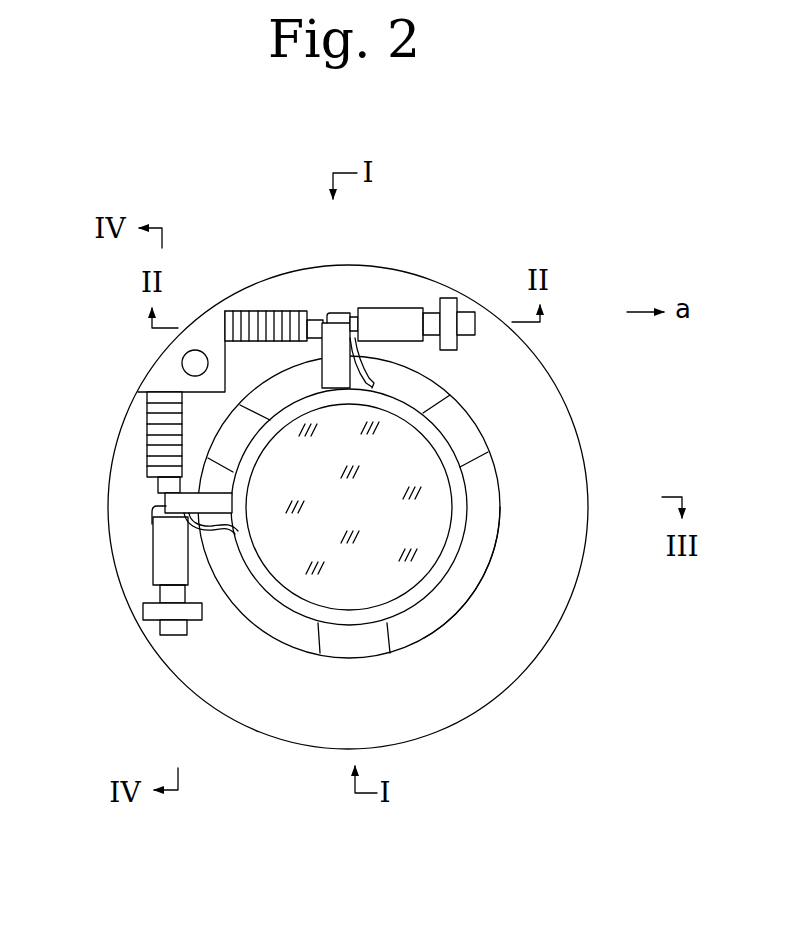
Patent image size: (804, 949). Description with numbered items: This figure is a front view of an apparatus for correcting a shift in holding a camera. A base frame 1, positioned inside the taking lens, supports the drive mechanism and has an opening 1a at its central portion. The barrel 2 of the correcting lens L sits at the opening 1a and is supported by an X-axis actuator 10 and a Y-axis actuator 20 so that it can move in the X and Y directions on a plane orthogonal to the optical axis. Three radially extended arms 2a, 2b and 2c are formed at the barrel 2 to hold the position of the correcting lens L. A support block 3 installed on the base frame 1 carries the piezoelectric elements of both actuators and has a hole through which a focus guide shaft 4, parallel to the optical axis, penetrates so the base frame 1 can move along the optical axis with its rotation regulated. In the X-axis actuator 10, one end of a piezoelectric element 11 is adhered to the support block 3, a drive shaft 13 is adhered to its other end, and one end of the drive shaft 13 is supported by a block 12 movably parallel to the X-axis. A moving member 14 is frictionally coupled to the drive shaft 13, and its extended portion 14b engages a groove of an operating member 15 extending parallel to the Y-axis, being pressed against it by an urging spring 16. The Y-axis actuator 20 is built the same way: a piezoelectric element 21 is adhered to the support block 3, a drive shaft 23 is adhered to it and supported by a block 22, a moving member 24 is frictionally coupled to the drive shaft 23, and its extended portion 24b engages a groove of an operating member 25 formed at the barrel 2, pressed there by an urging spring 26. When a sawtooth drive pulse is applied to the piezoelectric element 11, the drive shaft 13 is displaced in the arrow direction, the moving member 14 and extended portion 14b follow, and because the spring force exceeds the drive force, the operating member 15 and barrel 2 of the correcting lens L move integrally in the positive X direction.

The base frame 1 is at (448, 694).
The opening 1a is at (467, 580).
The barrel 2 is at (453, 527).
The arm 2a is at (333, 643).
The arm 2b is at (472, 437).
The arm 2c is at (223, 427).
The support block 3 is at (143, 379).
The focus guide shaft 4 is at (184, 353).
The X-axis actuator 10 is at (364, 288).
The piezoelectric element 11 is at (252, 310).
The block 12 is at (458, 350).
The drive shaft 13 is at (463, 318).
The moving member 14 is at (380, 320).
The extended portion 14b is at (342, 313).
The operating member 15 is at (328, 323).
The urging spring 16 is at (372, 387).
The Y-axis actuator 20 is at (127, 536).
The piezoelectric element 21 is at (146, 415).
The block 22 is at (150, 613).
The drive shaft 23 is at (170, 632).
The moving member 24 is at (162, 570).
The extended portion 24b is at (148, 510).
The operating member 25 is at (172, 496).
The urging spring 26 is at (228, 532).
The correcting lens L is at (403, 583).